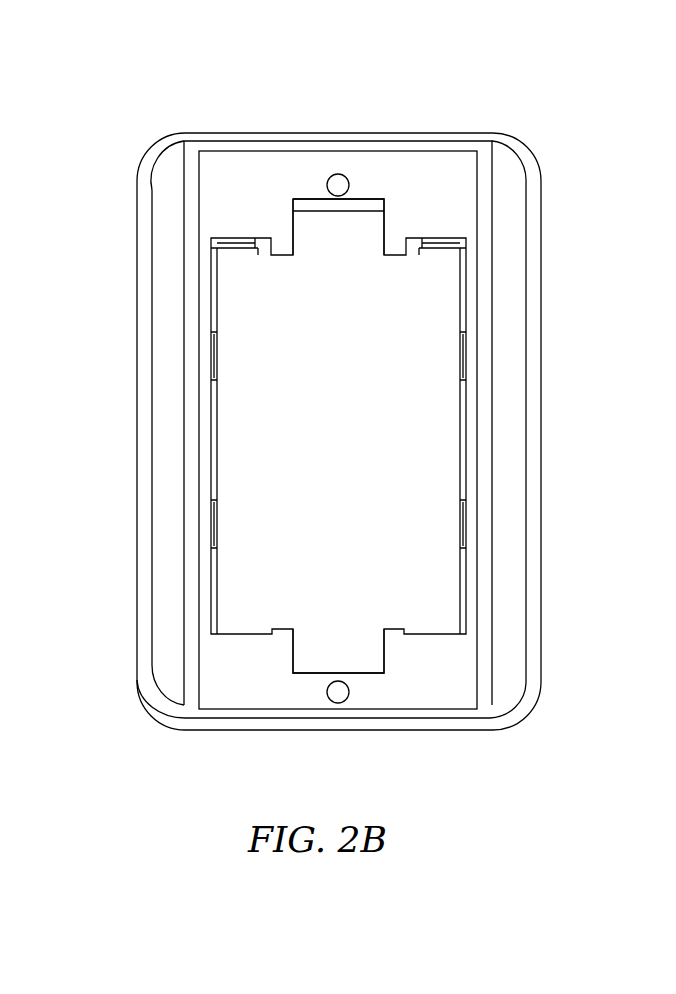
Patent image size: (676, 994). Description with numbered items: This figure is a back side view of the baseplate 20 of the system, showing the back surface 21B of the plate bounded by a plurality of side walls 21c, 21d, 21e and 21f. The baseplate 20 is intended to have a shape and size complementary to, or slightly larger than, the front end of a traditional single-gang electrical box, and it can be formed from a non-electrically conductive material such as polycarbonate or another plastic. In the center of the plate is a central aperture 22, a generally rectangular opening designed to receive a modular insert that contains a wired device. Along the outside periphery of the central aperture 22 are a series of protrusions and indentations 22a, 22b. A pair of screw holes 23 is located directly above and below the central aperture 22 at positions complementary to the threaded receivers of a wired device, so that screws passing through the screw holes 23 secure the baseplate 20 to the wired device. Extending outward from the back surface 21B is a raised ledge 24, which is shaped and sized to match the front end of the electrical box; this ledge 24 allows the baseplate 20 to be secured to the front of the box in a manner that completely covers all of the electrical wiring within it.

The baseplate 20 is at (202, 97).
The back surface 21B is at (418, 180).
The side wall 21c is at (137, 414).
The side wall 21d is at (541, 372).
The side wall 21e is at (258, 133).
The side wall 21f is at (383, 728).
The central aperture 22 is at (392, 528).
The protrusions 22a is at (387, 258).
The indentations 22b is at (235, 252).
The screw holes 23 is at (336, 180).
The raised ledge 24 is at (217, 137).